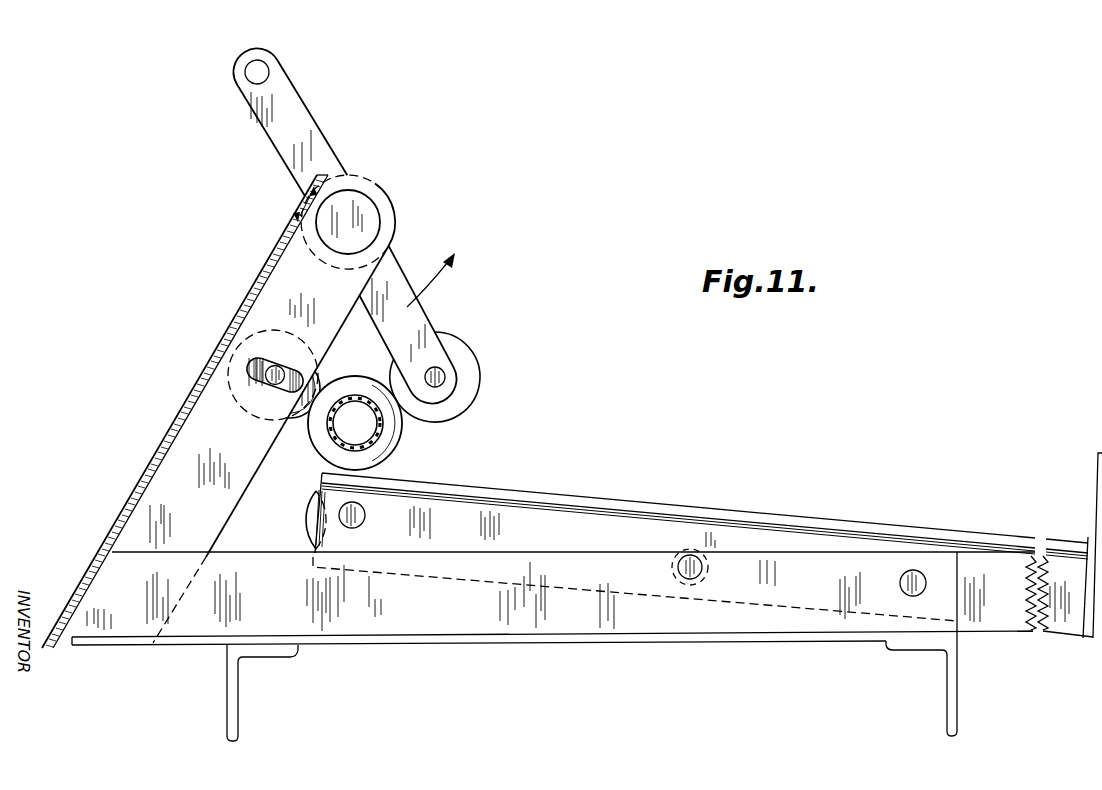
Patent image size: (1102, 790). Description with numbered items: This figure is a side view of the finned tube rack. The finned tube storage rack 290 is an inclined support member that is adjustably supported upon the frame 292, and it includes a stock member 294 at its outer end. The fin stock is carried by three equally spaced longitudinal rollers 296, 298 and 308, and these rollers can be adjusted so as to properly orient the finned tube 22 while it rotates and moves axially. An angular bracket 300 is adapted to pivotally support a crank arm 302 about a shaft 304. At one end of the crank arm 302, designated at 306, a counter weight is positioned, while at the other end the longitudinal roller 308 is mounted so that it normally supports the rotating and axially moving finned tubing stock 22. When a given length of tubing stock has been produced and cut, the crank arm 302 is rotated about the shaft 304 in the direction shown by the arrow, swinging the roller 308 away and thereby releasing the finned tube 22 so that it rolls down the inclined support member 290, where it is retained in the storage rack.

The finned tube 22 is at (401, 446).
The finned tube storage rack 290 is at (815, 520).
The frame 292 is at (956, 694).
The stock member 294 is at (1100, 462).
The longitudinal roller 296 is at (310, 512).
The longitudinal roller 298 is at (320, 367).
The angular bracket 300 is at (147, 473).
The crank arm 302 is at (303, 113).
The shaft 304 is at (368, 205).
The counter weight end 306 is at (268, 50).
The longitudinal roller 308 is at (470, 355).